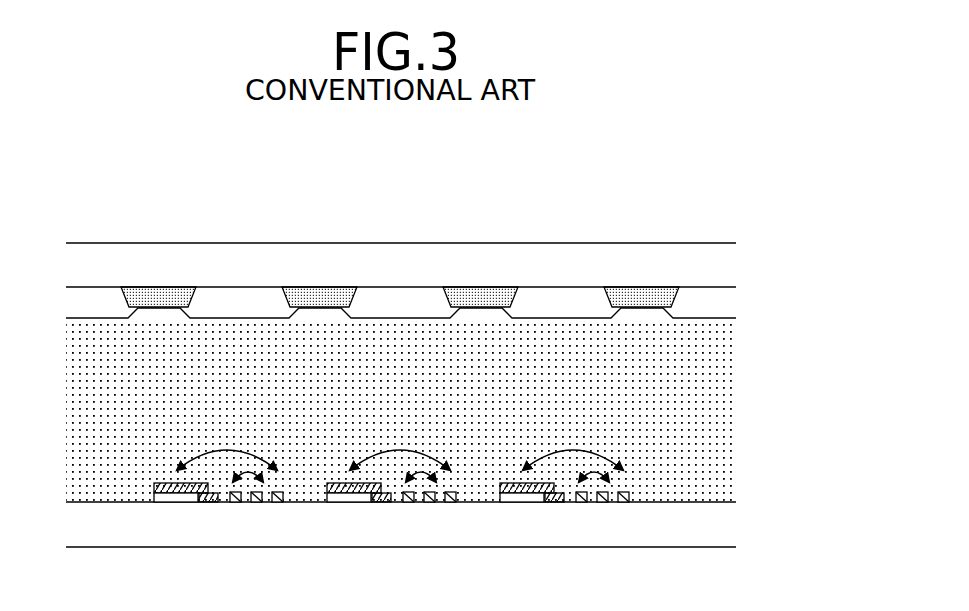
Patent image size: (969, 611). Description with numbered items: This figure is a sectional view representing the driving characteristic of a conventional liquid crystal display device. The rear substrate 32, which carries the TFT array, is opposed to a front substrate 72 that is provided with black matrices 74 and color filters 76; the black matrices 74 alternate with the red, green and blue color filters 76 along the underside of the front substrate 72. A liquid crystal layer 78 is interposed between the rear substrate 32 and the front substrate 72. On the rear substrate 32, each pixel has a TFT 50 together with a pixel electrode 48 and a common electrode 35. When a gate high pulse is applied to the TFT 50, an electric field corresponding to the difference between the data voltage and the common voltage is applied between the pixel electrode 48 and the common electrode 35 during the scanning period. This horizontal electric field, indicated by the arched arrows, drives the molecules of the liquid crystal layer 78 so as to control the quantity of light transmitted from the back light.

The front substrate 72 is at (582, 245).
The black matrices 74 is at (492, 287).
The color filters 76 is at (388, 290).
The liquid crystal layer 78 is at (723, 410).
The rear substrate 32 is at (380, 545).
The TFT 50 is at (167, 498).
The pixel electrode 48 is at (213, 498).
The common electrode 35 is at (237, 500).